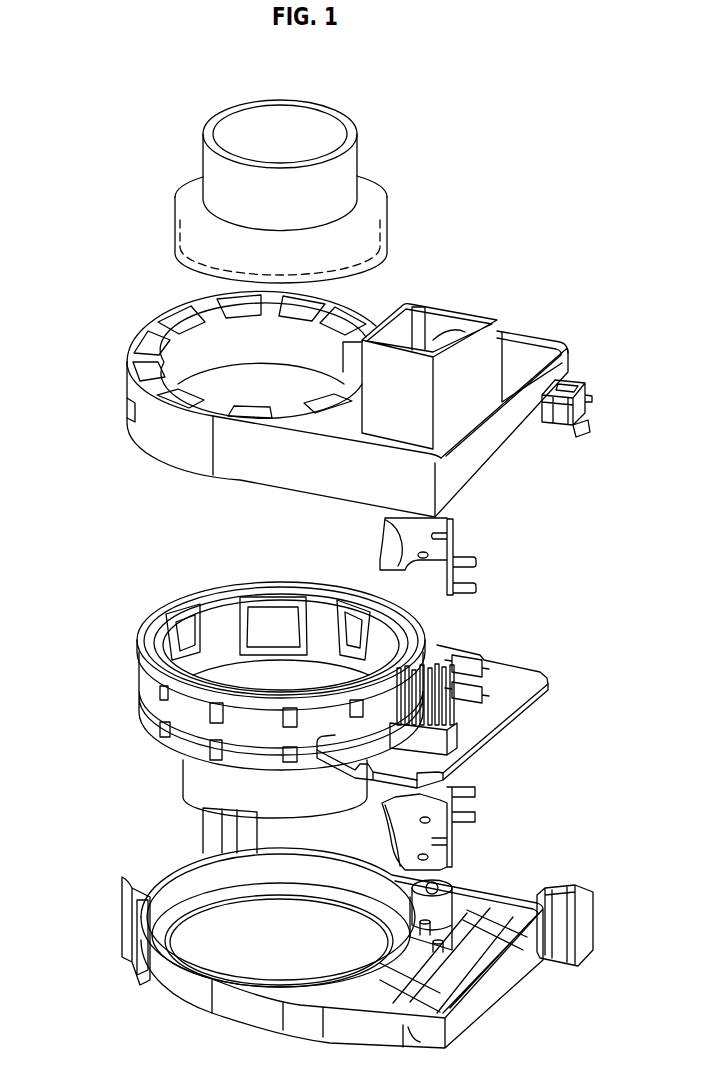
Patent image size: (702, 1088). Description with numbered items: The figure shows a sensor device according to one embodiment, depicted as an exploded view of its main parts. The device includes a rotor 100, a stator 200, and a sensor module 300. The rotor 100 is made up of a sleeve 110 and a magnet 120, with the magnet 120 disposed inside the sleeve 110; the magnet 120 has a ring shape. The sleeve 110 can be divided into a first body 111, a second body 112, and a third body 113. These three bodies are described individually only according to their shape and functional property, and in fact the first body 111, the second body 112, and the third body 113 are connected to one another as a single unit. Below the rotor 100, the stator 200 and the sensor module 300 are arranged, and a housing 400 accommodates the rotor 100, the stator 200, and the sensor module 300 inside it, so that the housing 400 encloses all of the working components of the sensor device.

The rotor 100 is at (368, 191).
The sleeve 110 is at (342, 191).
The first body 111 is at (350, 155).
The second body 112 is at (377, 192).
The third body 113 is at (387, 212).
The magnet 120 is at (345, 247).
The stator 200 is at (434, 617).
The sensor module 300 is at (481, 541).
The housing 400 is at (121, 413).